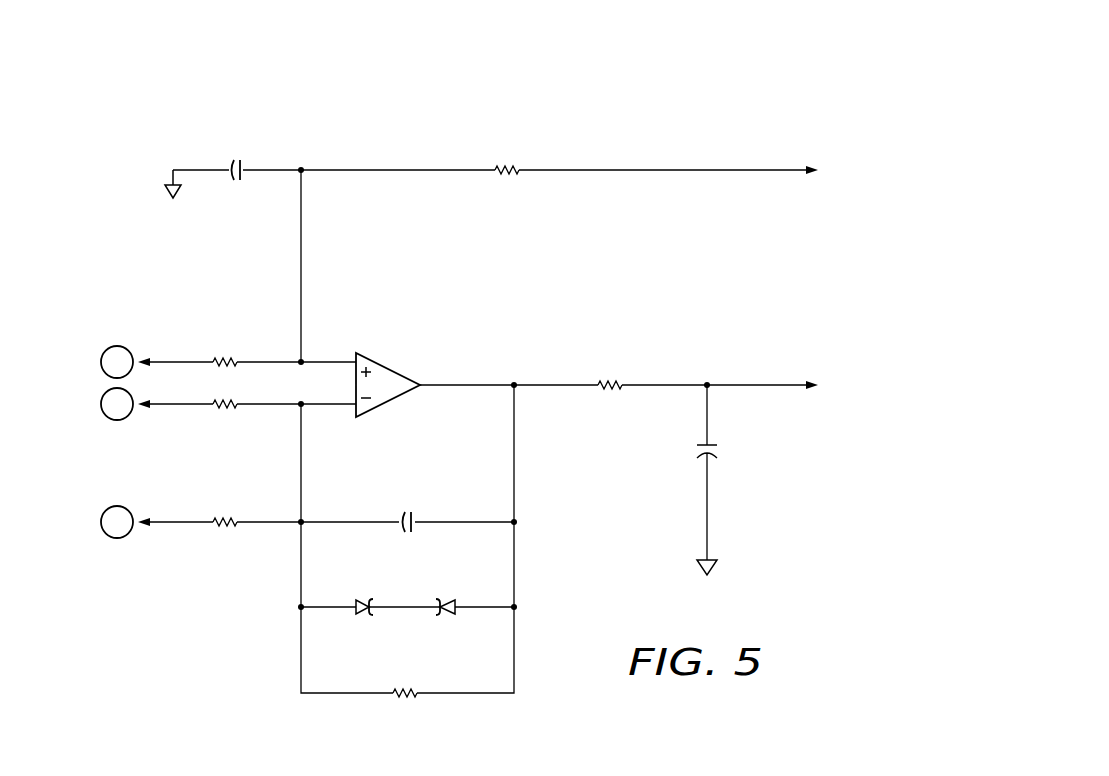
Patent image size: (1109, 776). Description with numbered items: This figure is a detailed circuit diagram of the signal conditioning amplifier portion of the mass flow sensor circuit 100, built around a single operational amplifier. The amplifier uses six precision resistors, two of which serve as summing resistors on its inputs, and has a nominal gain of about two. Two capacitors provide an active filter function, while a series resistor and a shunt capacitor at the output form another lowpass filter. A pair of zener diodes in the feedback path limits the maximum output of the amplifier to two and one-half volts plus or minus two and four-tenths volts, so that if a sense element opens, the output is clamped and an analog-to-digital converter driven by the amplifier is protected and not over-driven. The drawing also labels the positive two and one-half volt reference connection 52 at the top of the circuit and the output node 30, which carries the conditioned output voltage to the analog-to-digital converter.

The mass flow sensor circuit 100 is at (752, 84).
The +2.5V reference voltage 52 is at (875, 140).
The output voltage e_OUT to ADC 30 is at (866, 367).